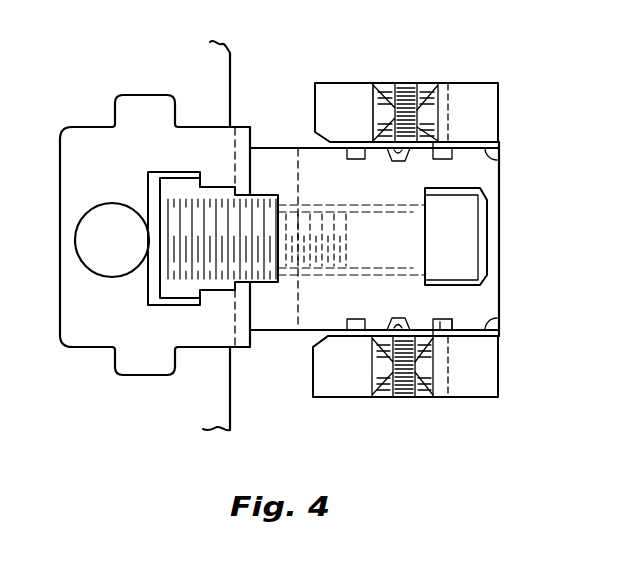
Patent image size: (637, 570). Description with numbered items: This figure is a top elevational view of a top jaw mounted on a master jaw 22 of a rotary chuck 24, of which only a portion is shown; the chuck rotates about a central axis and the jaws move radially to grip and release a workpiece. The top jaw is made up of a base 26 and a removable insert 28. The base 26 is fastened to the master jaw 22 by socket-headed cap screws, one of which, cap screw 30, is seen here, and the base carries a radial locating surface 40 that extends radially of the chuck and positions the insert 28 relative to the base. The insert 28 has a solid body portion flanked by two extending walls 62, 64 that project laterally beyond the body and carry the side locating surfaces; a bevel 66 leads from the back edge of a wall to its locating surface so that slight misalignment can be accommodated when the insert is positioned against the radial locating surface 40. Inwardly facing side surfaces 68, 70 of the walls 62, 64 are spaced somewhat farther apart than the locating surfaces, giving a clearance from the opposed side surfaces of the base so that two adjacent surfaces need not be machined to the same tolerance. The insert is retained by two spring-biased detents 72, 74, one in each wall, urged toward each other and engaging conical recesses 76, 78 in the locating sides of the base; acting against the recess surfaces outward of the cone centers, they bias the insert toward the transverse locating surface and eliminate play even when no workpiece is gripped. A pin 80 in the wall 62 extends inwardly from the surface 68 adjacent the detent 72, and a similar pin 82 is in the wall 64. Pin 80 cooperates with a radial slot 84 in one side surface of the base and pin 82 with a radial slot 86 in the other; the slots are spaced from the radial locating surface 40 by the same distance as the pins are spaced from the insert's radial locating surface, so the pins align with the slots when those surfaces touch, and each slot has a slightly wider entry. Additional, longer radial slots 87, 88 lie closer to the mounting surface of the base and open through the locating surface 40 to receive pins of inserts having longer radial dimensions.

The master jaw 22 is at (110, 171).
The rotary chuck 24 is at (218, 72).
The base 26 is at (500, 179).
The removable insert 28 is at (500, 114).
The socket-headed cap screw 30 is at (467, 224).
The radial locating surface 40 is at (500, 302).
The extending wall 62 is at (352, 388).
The extending wall 64 is at (344, 85).
The bevel 66 is at (343, 330).
The inwardly facing side surface 68 is at (505, 320).
The inwardly facing side surface 70 is at (497, 151).
The detent 72 is at (372, 355).
The detent 74 is at (440, 121).
The conical recess 76 is at (383, 314).
The conical recess 78 is at (372, 121).
The pin 80 is at (440, 326).
The pin 82 is at (432, 154).
The radial slot 84 is at (434, 320).
The radial slot 86 is at (446, 163).
The additional radial slot 87 is at (352, 316).
The additional radial slot 88 is at (354, 163).